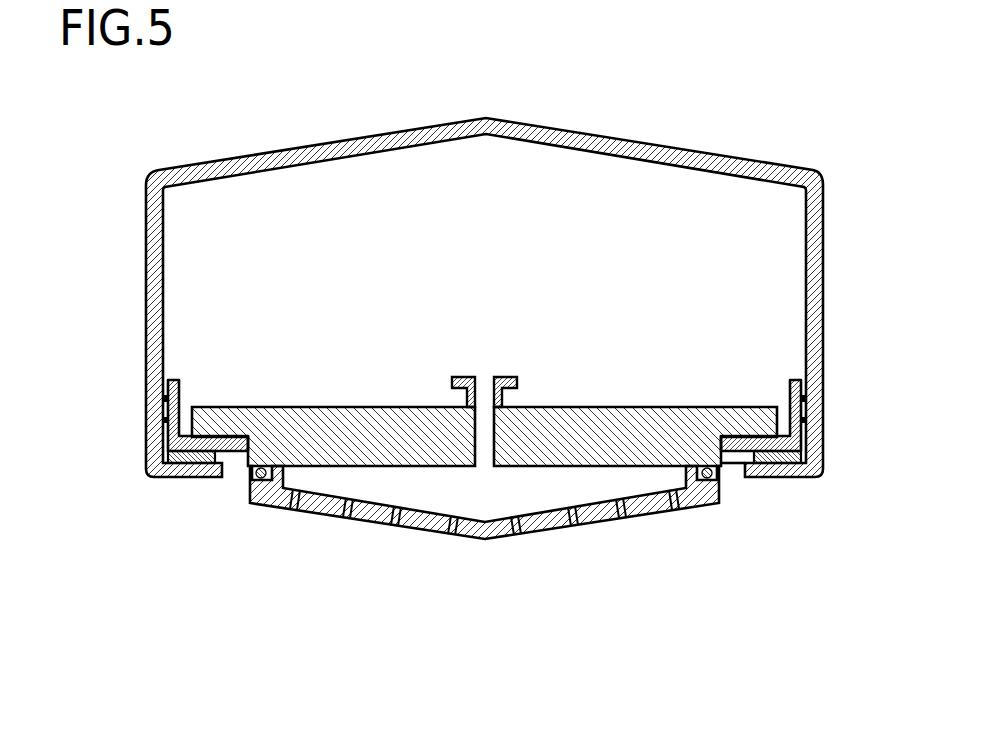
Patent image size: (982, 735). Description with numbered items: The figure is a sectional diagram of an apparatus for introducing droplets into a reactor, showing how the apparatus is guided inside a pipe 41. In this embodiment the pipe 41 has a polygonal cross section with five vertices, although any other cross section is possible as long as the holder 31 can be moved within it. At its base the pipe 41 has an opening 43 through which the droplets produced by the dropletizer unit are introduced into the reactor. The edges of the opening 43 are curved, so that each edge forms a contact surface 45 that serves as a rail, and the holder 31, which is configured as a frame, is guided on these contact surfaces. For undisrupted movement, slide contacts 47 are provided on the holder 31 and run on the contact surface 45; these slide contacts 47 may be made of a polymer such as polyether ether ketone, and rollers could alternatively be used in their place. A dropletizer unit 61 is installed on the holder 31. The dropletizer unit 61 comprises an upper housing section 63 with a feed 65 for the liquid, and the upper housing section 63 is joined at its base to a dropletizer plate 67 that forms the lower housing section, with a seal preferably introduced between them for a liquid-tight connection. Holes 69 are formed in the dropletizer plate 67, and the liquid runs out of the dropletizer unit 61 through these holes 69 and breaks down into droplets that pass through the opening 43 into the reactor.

The holder 31 is at (165, 392).
The pipe 41 is at (292, 160).
The opening 43 is at (731, 462).
The contact surface 45 is at (228, 462).
The slide contact 47 is at (165, 420).
The dropletizer unit 61 is at (348, 393).
The upper housing section 63 is at (632, 418).
The feed 65 is at (503, 382).
The dropletizer plate 67 is at (272, 505).
The holes 69 is at (347, 522).